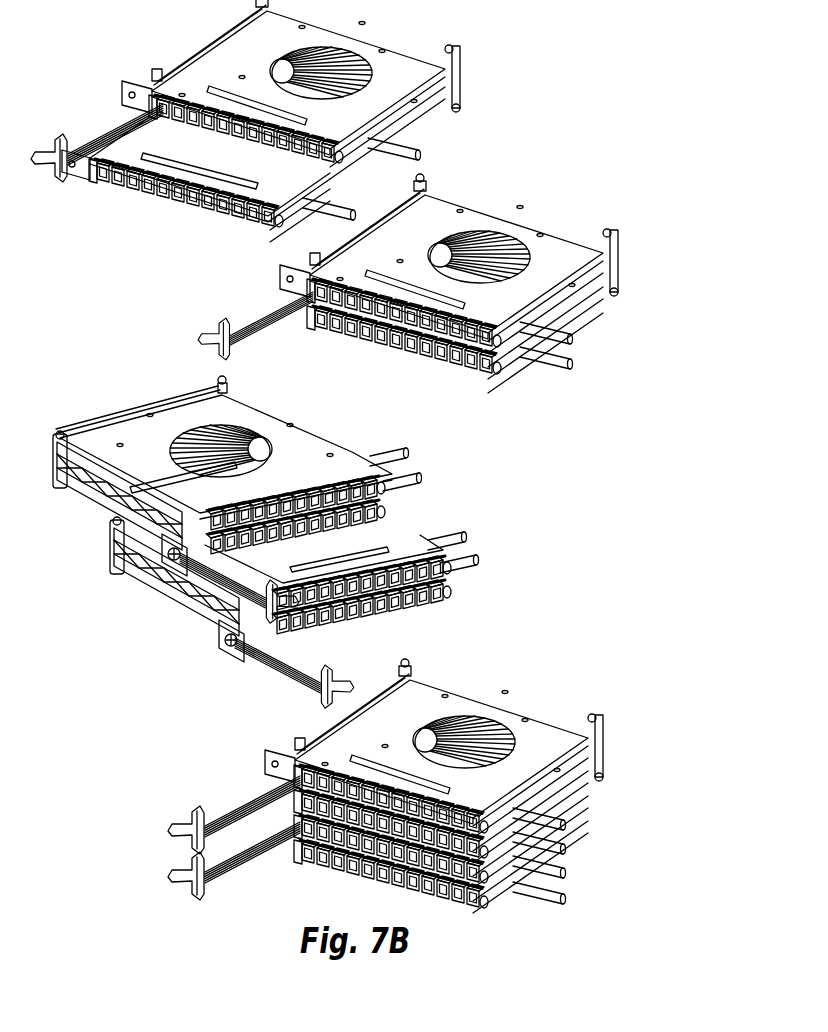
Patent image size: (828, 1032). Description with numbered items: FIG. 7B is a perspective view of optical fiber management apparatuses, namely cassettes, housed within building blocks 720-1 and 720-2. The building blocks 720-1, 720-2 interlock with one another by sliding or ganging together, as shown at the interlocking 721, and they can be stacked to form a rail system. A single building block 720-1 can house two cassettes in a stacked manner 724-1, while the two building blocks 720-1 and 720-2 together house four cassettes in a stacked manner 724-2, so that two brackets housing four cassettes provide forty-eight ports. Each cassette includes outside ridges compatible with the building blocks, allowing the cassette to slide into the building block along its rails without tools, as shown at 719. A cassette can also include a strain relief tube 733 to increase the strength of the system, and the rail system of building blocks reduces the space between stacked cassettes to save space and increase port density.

The cassette sliding into building block 719 is at (112, 118).
The interlocking of building blocks 721 is at (213, 580).
The strain relief tube 733 is at (566, 364).
The stacked manner of cassettes in a single building block 724-1 is at (446, 283).
The stacked manner of cassettes in multiple building blocks 724-2 is at (627, 700).
The building block 720-1 is at (178, 800).
The building block 720-2 is at (178, 857).